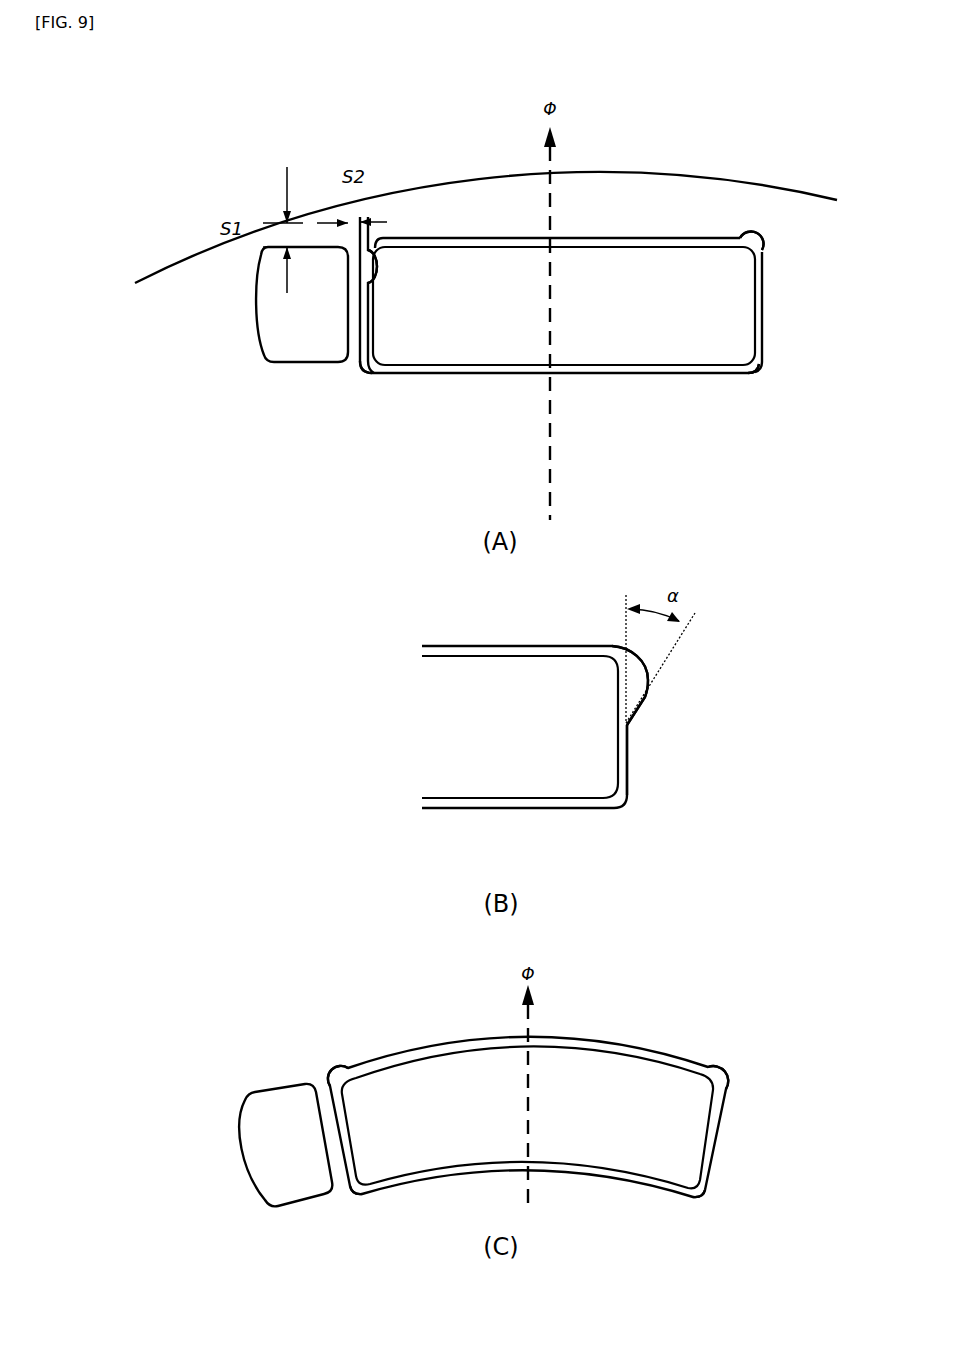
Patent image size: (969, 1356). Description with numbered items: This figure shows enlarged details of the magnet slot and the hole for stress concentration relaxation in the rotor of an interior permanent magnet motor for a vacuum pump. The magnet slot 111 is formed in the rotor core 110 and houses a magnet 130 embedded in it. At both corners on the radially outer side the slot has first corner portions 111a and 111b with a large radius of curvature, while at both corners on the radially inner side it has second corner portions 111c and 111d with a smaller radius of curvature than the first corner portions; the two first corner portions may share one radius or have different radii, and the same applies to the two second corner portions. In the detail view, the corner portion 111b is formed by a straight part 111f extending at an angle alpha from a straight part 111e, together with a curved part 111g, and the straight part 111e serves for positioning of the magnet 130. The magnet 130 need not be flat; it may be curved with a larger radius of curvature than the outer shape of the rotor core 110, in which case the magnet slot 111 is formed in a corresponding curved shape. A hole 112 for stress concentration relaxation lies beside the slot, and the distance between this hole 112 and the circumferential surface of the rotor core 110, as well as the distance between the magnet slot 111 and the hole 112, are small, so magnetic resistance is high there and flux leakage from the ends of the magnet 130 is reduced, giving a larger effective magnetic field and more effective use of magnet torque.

The rotor core 110 is at (652, 204).
The magnet slot 111 is at (607, 375).
The first corner portion 111a is at (383, 234).
The first corner portion 111b is at (762, 243).
The second corner portion 111c is at (757, 373).
The second corner portion 111d is at (372, 373).
The straight part 111e is at (627, 767).
The straight part 111f is at (645, 702).
The curved part 111g is at (650, 668).
The hole for stress concentration relaxation 112 is at (305, 364).
The magnet 130 is at (505, 328).